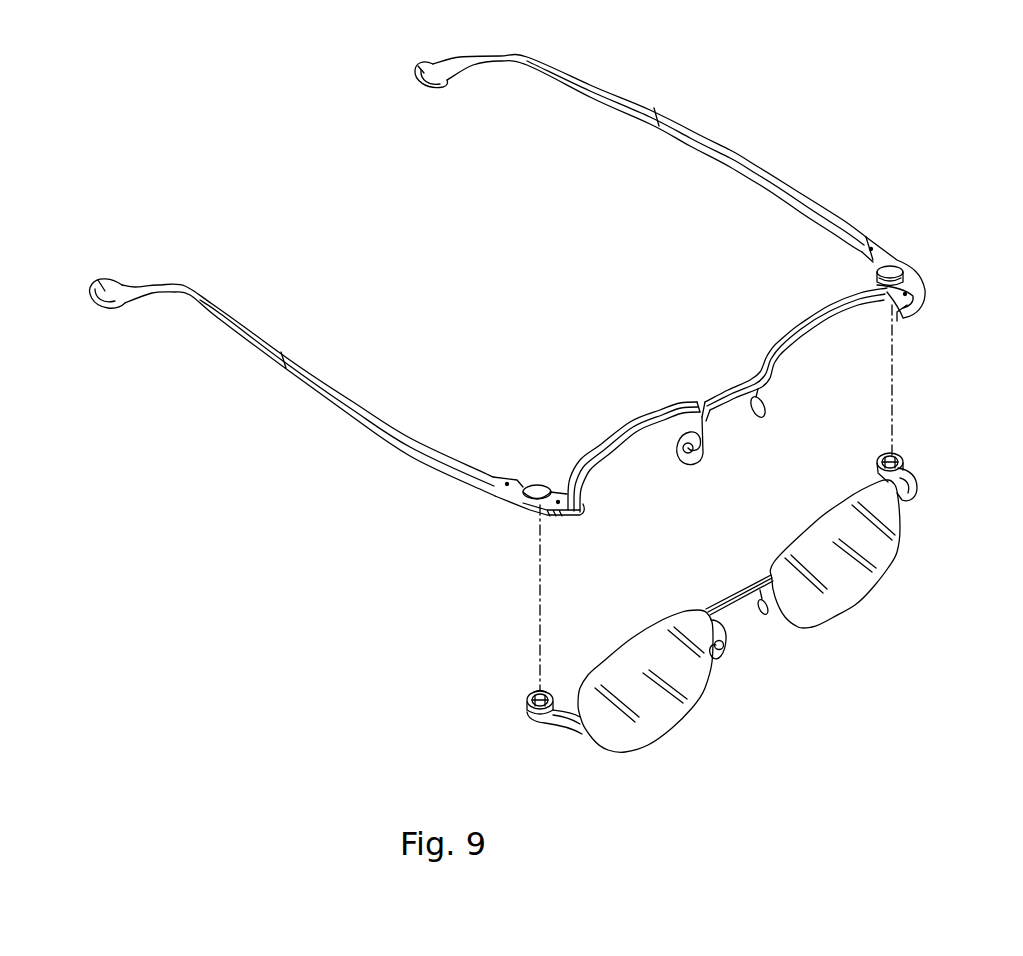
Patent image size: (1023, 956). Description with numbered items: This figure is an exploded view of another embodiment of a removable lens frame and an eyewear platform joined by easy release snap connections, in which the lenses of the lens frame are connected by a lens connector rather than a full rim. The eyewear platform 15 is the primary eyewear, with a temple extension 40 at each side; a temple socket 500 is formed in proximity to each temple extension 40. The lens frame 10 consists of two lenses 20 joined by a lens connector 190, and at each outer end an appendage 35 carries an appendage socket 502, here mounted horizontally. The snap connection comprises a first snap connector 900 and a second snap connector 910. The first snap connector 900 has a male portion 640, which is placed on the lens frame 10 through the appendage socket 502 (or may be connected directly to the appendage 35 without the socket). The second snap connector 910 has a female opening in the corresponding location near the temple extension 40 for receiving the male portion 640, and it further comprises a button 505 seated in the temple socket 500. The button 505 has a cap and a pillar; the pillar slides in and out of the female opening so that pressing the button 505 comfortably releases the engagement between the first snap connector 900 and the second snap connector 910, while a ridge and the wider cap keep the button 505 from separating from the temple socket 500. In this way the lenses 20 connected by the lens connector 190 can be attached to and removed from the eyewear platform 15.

The lens frame 10 is at (695, 604).
The eyewear platform 15 is at (750, 151).
The lenses 20 is at (882, 563).
The appendage 35 is at (502, 707).
The temple extension 40 is at (860, 260).
The lens connector 190 is at (741, 588).
The temple socket 500 is at (872, 277).
The appendage socket 502 is at (527, 713).
The button 505 is at (528, 484).
The male portion 640 is at (898, 456).
The first snap connector 900 is at (528, 689).
The second snap connector 910 is at (532, 450).